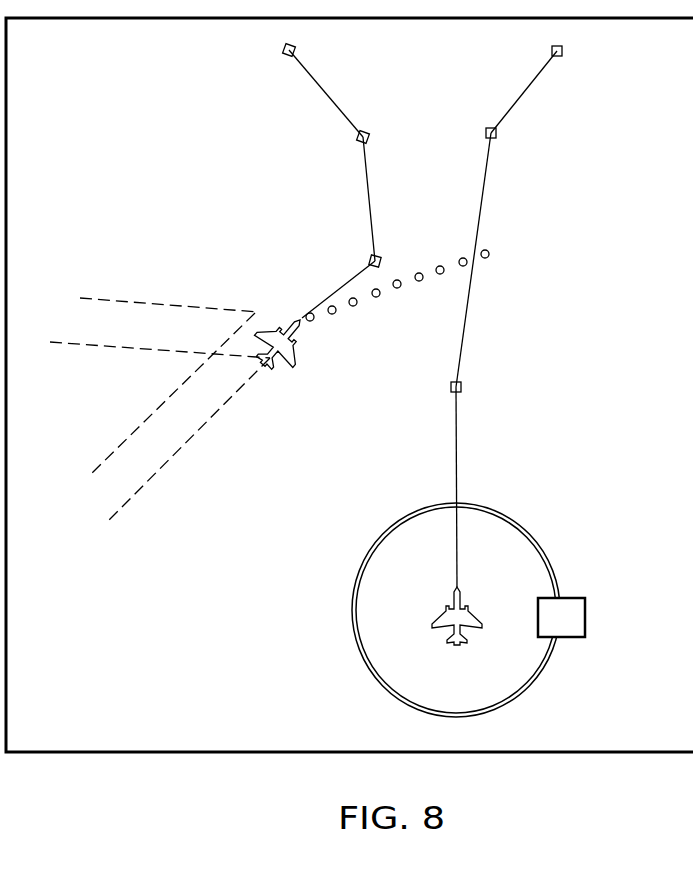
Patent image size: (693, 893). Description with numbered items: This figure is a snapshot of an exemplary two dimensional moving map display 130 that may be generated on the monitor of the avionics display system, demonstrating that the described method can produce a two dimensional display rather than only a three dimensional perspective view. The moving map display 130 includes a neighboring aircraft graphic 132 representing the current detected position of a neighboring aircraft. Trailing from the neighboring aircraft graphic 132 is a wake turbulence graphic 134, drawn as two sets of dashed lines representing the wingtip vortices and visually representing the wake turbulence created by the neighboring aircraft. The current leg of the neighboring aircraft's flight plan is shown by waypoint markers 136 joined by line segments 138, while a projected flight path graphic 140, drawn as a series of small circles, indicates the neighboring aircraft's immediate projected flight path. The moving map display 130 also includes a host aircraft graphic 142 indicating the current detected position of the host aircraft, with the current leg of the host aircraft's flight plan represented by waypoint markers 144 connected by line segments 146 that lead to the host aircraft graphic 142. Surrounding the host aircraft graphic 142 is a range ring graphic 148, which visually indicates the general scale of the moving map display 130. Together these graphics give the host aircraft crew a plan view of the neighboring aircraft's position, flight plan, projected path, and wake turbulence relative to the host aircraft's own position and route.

The moving map display 130 is at (97, 72).
The neighboring aircraft graphic 132 is at (295, 308).
The wake turbulence graphic 134 is at (143, 302).
The waypoint markers 136 is at (283, 53).
The line segments 138 is at (333, 101).
The projected flight path graphic 140 is at (378, 299).
The host aircraft graphic 142 is at (452, 646).
The waypoint markers 144 is at (563, 52).
The line segments 146 is at (524, 92).
The range ring graphic 148 is at (586, 617).